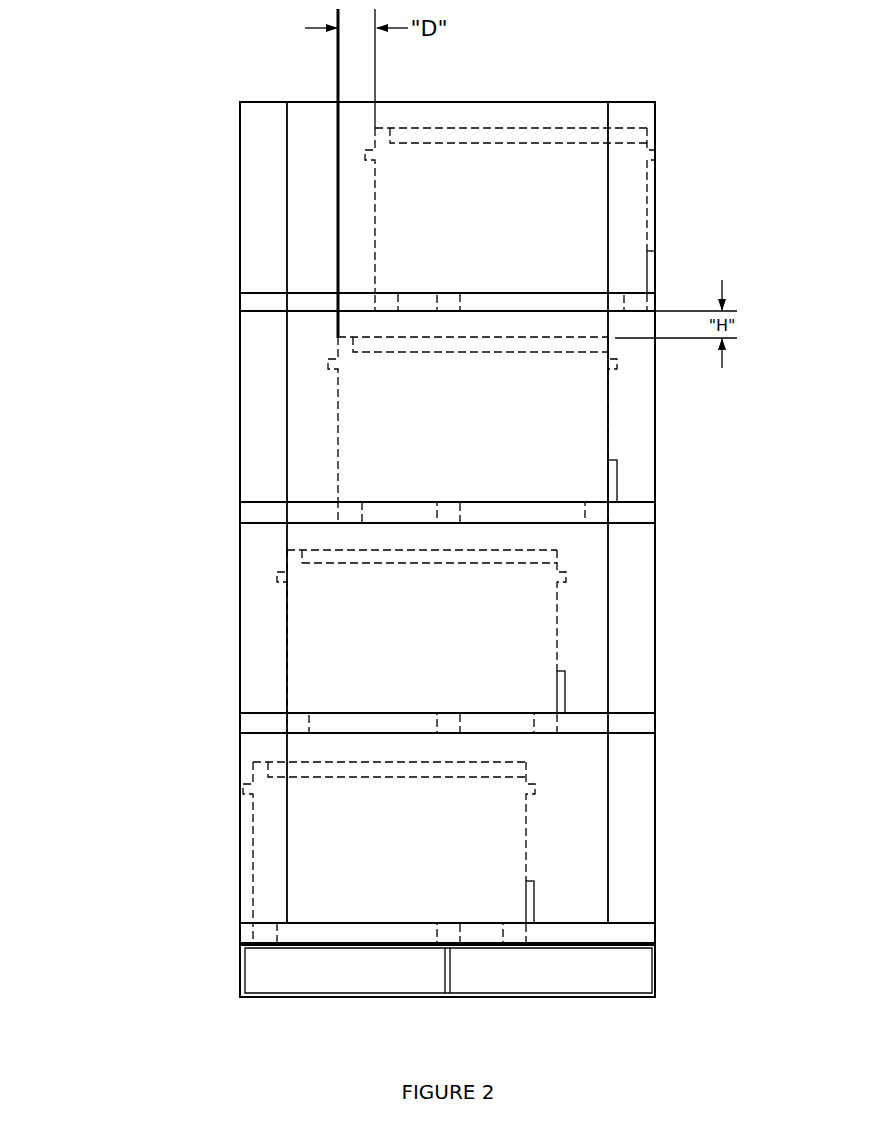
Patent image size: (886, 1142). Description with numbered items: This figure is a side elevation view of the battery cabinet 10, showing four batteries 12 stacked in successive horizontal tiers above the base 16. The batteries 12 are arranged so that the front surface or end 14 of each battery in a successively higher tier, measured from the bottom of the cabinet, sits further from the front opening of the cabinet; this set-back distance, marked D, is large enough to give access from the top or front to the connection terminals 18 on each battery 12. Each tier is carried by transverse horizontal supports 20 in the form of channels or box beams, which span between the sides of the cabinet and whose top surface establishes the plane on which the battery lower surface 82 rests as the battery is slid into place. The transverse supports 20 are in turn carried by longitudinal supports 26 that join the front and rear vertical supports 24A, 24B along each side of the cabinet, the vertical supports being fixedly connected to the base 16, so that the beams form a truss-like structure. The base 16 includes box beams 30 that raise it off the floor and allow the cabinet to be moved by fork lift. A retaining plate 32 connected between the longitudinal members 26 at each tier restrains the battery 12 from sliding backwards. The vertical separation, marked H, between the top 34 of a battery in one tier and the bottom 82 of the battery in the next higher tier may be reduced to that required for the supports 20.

The battery cabinet 10 is at (239, 240).
The battery 12 is at (337, 635).
The front surface or end of battery 14 is at (252, 856).
The base 16 is at (247, 942).
The connection terminals 18 is at (295, 552).
The transverse horizontal supports 20 is at (466, 515).
The front vertical support 24A is at (240, 118).
The rear vertical support 24B is at (656, 117).
The longitudinal supports 26 is at (658, 722).
The box beams 30 is at (608, 972).
The retaining plate 32 is at (619, 482).
The top of battery 34 is at (525, 128).
The battery lower surface 82 is at (501, 717).